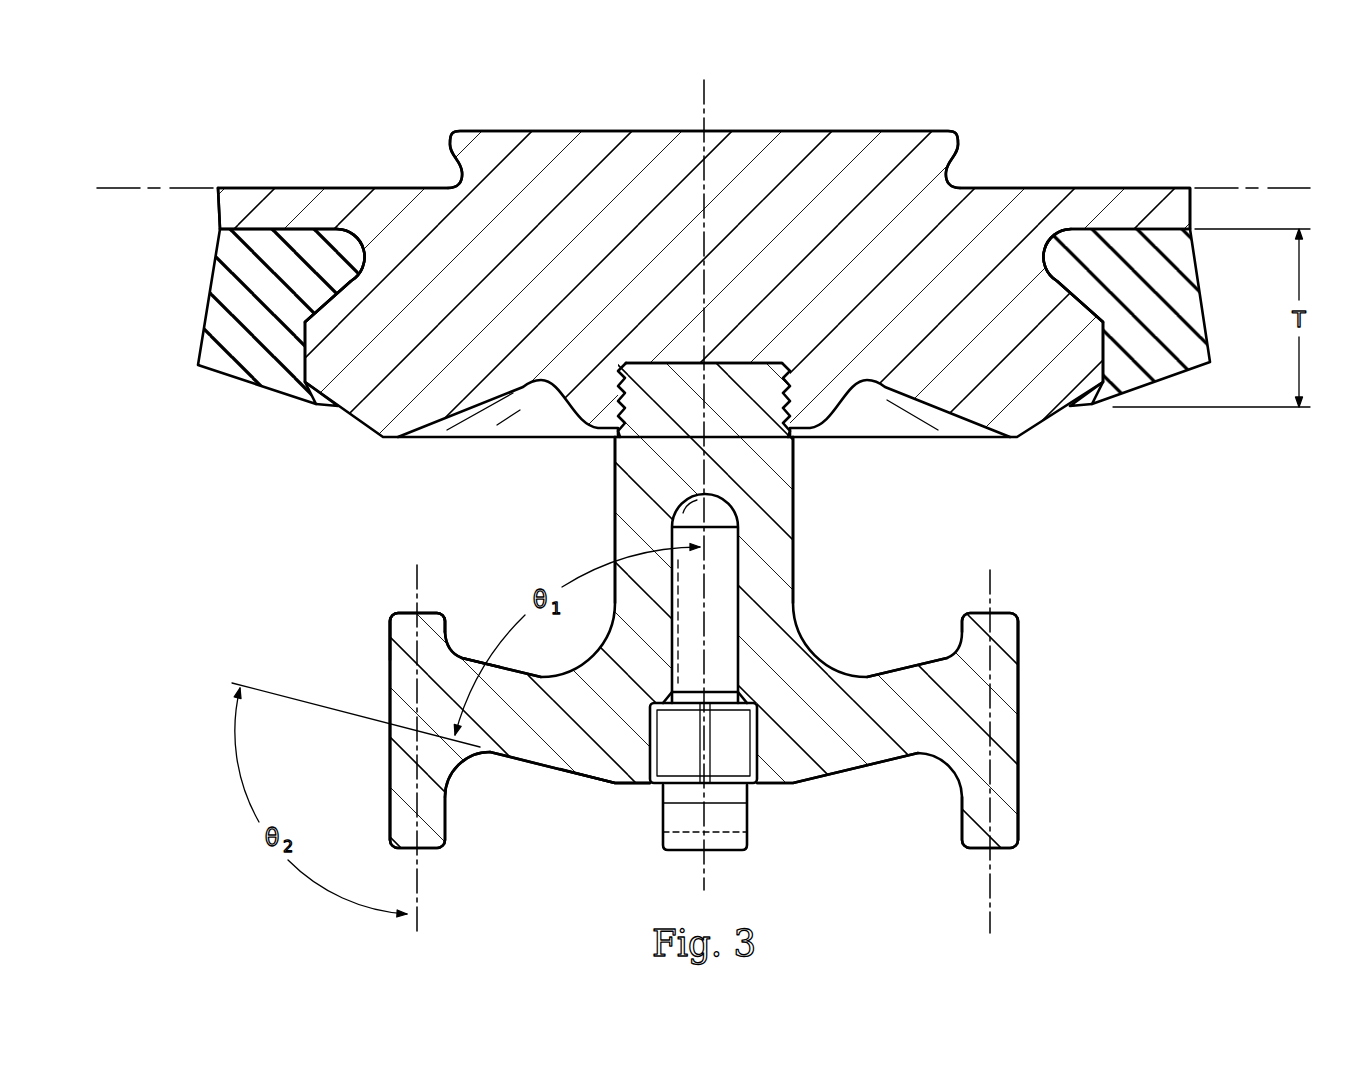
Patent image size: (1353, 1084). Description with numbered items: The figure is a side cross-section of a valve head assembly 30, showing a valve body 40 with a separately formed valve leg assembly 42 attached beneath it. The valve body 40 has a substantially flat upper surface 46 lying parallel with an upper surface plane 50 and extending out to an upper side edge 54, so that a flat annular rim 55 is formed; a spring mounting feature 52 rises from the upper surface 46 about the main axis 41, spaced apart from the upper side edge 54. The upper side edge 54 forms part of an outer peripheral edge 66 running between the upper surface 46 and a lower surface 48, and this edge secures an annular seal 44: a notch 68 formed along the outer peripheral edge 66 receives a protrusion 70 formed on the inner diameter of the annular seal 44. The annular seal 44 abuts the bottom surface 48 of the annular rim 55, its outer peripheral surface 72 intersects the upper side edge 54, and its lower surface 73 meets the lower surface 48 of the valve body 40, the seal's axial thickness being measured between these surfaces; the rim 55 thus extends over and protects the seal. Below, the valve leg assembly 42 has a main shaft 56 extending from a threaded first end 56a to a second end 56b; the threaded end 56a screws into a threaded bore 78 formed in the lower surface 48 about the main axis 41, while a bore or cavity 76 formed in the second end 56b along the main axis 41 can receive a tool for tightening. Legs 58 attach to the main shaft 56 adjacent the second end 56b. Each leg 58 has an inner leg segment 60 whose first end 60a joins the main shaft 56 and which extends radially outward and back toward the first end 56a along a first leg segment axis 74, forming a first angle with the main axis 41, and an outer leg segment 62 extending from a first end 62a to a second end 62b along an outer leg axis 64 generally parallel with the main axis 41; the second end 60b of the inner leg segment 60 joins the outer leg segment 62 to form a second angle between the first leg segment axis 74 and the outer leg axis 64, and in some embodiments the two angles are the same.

The valve head assembly 30 is at (257, 104).
The valve body 40 is at (1150, 184).
The main axis 41 is at (701, 98).
The valve leg assembly 42 is at (1110, 827).
The annular seal 44 is at (1212, 308).
The upper surface 46 is at (300, 192).
The lower surface 48 is at (1003, 440).
The upper surface plane 50 is at (125, 187).
The spring mounting feature 52 is at (555, 133).
The upper side edge 54 is at (218, 210).
The annular rim 55 is at (243, 197).
The main shaft 56 is at (613, 500).
The first end 56a is at (728, 397).
The second end 56b is at (757, 786).
The legs 58 is at (377, 812).
The inner leg segment 60 is at (545, 768).
The first end 60a is at (611, 783).
The second end 60b is at (454, 658).
The outer leg segment 62 is at (390, 768).
The first end 62a is at (390, 660).
The second end 62b is at (450, 822).
The outer leg axis 64 is at (420, 893).
The outer peripheral edge 66 is at (322, 272).
The notch 68 is at (1057, 250).
The protrusion 70 is at (347, 250).
The outer peripheral surface 72 is at (205, 318).
The lower surface 73 is at (278, 400).
The first leg segment axis 74 is at (301, 702).
The bore or cavity 76 is at (745, 735).
The threaded bore 78 is at (647, 393).